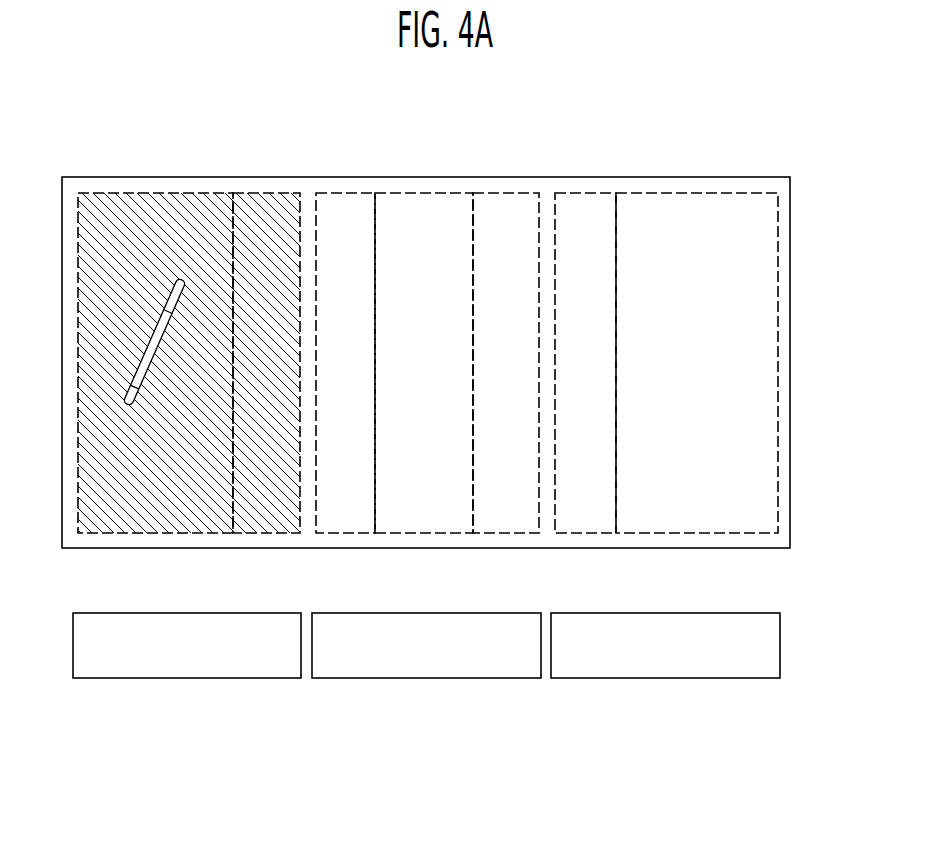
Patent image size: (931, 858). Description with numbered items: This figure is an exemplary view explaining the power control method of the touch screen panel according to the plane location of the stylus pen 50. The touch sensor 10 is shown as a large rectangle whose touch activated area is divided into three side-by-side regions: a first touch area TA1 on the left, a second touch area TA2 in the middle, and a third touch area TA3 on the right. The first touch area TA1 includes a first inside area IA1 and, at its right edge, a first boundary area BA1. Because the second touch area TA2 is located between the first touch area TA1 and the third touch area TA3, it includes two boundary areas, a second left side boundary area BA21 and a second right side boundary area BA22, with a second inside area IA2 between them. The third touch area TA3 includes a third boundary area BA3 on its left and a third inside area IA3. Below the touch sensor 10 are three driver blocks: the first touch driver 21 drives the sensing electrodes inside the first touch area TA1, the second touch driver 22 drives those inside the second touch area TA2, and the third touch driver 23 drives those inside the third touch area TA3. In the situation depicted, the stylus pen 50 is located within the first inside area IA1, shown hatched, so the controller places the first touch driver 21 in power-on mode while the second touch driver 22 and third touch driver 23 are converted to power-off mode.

The touch sensor 10 is at (790, 287).
The stylus pen 50 is at (143, 348).
The first touch driver 21 is at (107, 679).
The second touch driver 22 is at (390, 679).
The third touch driver 23 is at (711, 679).
The first touch area TA1 is at (315, 313).
The second touch area TA2 is at (427, 313).
The third touch area TA3 is at (666, 313).
The first inside area IA1 is at (195, 192).
The first boundary area BA1 is at (277, 192).
The second left side boundary area BA21 is at (346, 192).
The second inside area IA2 is at (420, 192).
The second right side boundary area BA22 is at (497, 328).
The third boundary area BA3 is at (587, 192).
The third inside area IA3 is at (670, 192).